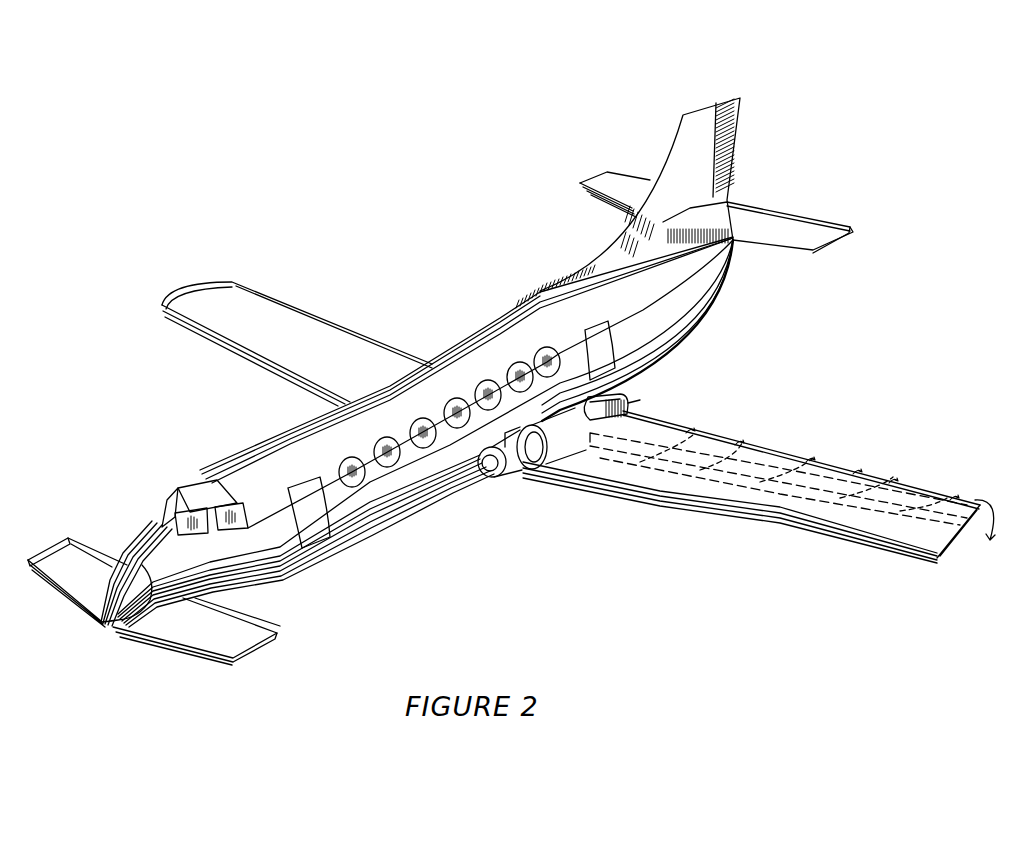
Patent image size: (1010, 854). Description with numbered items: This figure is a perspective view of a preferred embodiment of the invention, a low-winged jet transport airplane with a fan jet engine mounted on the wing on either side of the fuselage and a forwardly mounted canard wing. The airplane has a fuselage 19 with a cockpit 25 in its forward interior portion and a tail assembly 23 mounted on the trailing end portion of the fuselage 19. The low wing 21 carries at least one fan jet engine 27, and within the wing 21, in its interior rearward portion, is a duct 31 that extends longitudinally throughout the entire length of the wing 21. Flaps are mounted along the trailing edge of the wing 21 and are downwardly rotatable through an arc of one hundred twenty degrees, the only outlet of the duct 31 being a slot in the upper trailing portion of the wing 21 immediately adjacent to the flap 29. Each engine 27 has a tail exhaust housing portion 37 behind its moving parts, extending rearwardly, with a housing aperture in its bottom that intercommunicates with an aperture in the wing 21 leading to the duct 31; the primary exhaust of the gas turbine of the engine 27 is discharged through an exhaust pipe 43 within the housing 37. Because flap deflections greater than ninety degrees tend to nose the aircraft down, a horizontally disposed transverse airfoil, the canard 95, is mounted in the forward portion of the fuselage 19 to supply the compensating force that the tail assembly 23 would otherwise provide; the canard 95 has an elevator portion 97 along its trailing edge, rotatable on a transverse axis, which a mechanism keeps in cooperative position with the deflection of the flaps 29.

The fuselage 19 is at (277, 458).
The wing 21 is at (197, 293).
The tail assembly 23 is at (698, 128).
The cockpit 25 is at (170, 508).
The fan jet engine 27 is at (503, 473).
The flap 29 is at (981, 512).
The duct 31 is at (703, 475).
The tail exhaust housing portion 37 is at (639, 409).
The exhaust pipe 43 is at (608, 396).
The canard 95 is at (53, 557).
The elevator portion 97 is at (103, 558).